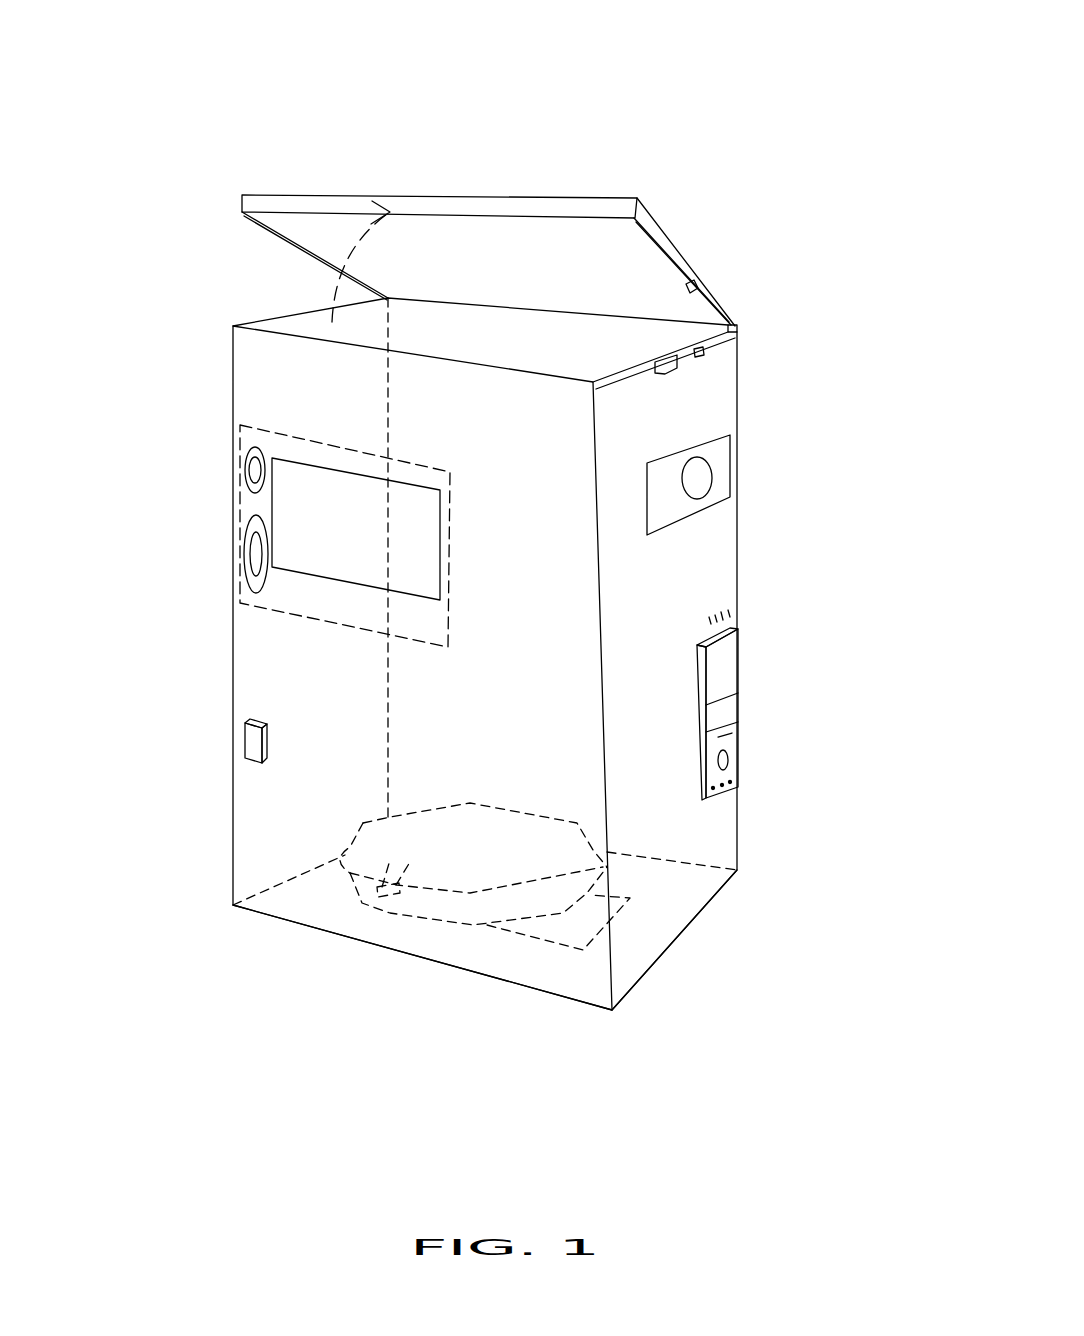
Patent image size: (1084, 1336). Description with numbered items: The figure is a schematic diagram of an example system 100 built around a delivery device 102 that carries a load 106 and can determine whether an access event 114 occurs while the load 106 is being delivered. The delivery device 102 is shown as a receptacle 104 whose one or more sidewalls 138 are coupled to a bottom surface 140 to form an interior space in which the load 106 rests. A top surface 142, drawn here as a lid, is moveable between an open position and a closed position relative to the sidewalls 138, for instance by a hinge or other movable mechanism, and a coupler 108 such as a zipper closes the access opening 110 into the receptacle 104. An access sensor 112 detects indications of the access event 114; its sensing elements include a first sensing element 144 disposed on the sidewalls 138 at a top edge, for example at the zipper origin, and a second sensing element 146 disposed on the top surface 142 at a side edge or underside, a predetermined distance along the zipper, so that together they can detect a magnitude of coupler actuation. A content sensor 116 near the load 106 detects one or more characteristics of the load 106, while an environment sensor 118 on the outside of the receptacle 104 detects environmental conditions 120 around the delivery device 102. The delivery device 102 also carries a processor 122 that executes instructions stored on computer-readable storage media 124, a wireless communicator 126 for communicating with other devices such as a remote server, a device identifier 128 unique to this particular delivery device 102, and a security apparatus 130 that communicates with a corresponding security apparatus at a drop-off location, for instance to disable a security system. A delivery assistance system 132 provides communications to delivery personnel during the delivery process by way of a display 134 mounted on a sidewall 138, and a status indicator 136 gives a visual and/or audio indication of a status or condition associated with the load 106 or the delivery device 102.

The system 100 is at (236, 32).
The delivery device 102 is at (133, 490).
The receptacle 104 is at (248, 843).
The load 106 is at (422, 905).
The coupler 108 is at (746, 307).
The access opening 110 is at (307, 323).
The access sensor 112 is at (672, 368).
The access event 114 is at (323, 293).
The content sensor 116 is at (552, 943).
The environment sensor 118 is at (723, 478).
The environmental conditions 120 is at (943, 466).
The processor 122 is at (725, 712).
The computer-readable storage media 124 is at (722, 673).
The wireless communicator 126 is at (725, 760).
The device identifier 128 is at (720, 613).
The security apparatus 130 is at (247, 748).
The delivery assistance system 132 is at (260, 608).
The display 134 is at (369, 539).
The status indicator 136 is at (731, 783).
The sidewalls 138 is at (504, 709).
The bottom surface 140 is at (685, 932).
The top surface 142 is at (478, 196).
The first sensing element 144 is at (700, 283).
The second sensing element 146 is at (700, 355).